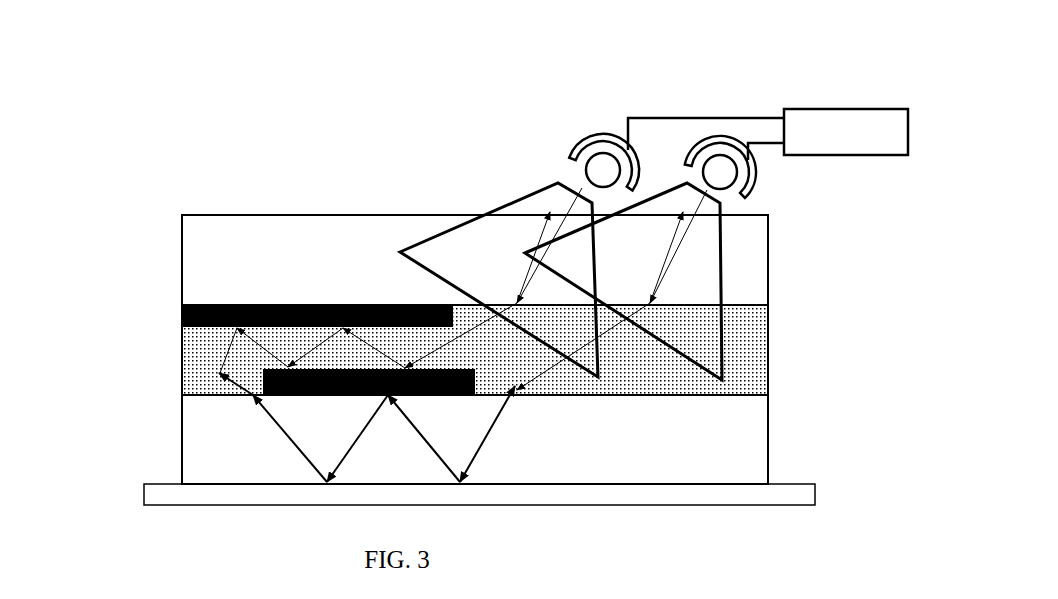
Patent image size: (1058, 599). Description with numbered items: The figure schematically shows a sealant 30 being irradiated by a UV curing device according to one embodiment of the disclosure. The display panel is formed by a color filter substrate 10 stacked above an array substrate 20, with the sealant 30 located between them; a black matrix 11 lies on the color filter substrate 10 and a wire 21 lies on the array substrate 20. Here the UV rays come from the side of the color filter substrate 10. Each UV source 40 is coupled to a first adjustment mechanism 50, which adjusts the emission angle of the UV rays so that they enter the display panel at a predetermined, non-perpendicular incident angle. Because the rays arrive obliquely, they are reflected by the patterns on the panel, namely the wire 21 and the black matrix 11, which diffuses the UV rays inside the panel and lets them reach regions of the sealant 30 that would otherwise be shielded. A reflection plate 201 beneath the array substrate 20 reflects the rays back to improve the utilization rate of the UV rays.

The color filter substrate 10 is at (148, 262).
The black matrix 11 is at (182, 321).
The array substrate 20 is at (168, 447).
The wire 21 is at (263, 377).
The reflection plate 201 is at (795, 493).
The sealant 30 is at (768, 354).
The UV source 40 is at (611, 135).
The first adjustment mechanism 50 is at (836, 109).